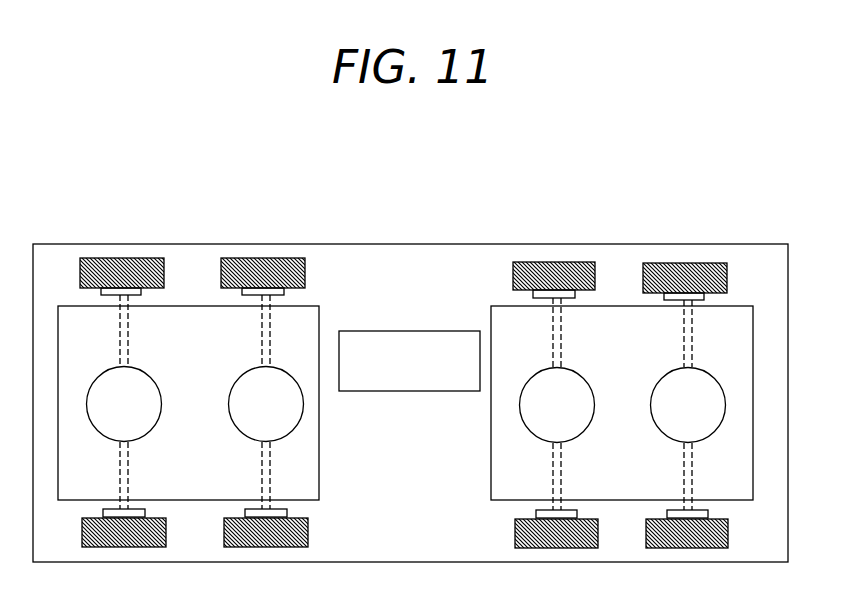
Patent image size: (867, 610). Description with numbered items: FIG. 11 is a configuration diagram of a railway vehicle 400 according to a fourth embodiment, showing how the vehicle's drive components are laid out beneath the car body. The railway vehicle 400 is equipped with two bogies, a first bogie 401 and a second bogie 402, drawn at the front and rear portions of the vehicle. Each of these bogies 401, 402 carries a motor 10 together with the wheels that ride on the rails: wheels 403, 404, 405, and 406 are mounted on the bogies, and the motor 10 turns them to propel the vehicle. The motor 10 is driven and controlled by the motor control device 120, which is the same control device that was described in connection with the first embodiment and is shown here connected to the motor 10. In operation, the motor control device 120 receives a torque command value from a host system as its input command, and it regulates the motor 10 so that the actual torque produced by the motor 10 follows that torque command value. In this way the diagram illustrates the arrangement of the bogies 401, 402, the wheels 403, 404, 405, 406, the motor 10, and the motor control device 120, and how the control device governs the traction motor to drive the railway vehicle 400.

The motor 10 is at (97, 425).
The motor control device 120 is at (395, 331).
The railway vehicle 400 is at (655, 244).
The bogie 401 is at (319, 306).
The bogie 402 is at (732, 306).
The wheel 403 is at (118, 258).
The wheel 404 is at (262, 258).
The wheel 405 is at (549, 262).
The wheel 406 is at (716, 263).